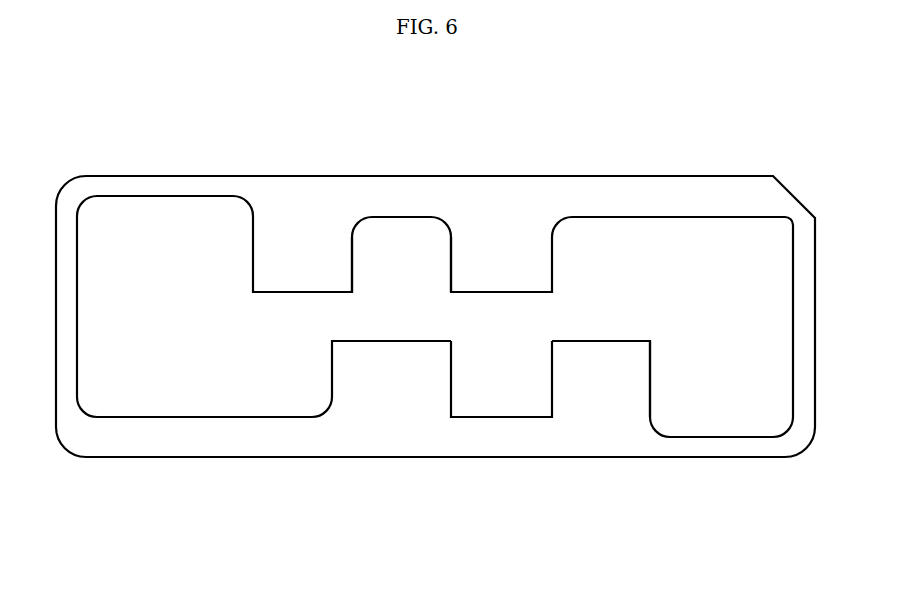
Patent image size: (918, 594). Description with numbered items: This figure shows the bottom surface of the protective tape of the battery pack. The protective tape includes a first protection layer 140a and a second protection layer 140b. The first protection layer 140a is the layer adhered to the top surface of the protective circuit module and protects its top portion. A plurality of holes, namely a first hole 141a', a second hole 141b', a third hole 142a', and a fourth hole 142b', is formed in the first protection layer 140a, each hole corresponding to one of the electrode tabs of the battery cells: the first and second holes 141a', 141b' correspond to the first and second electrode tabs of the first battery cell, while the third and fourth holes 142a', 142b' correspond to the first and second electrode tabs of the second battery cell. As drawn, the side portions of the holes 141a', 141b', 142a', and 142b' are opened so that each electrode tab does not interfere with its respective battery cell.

The first protection layer 140a is at (278, 375).
The second protection layer 140b is at (313, 235).
The first hole 141a' is at (302, 195).
The second hole 141b' is at (502, 195).
The third hole 142a' is at (473, 441).
The fourth hole 142b' is at (602, 441).